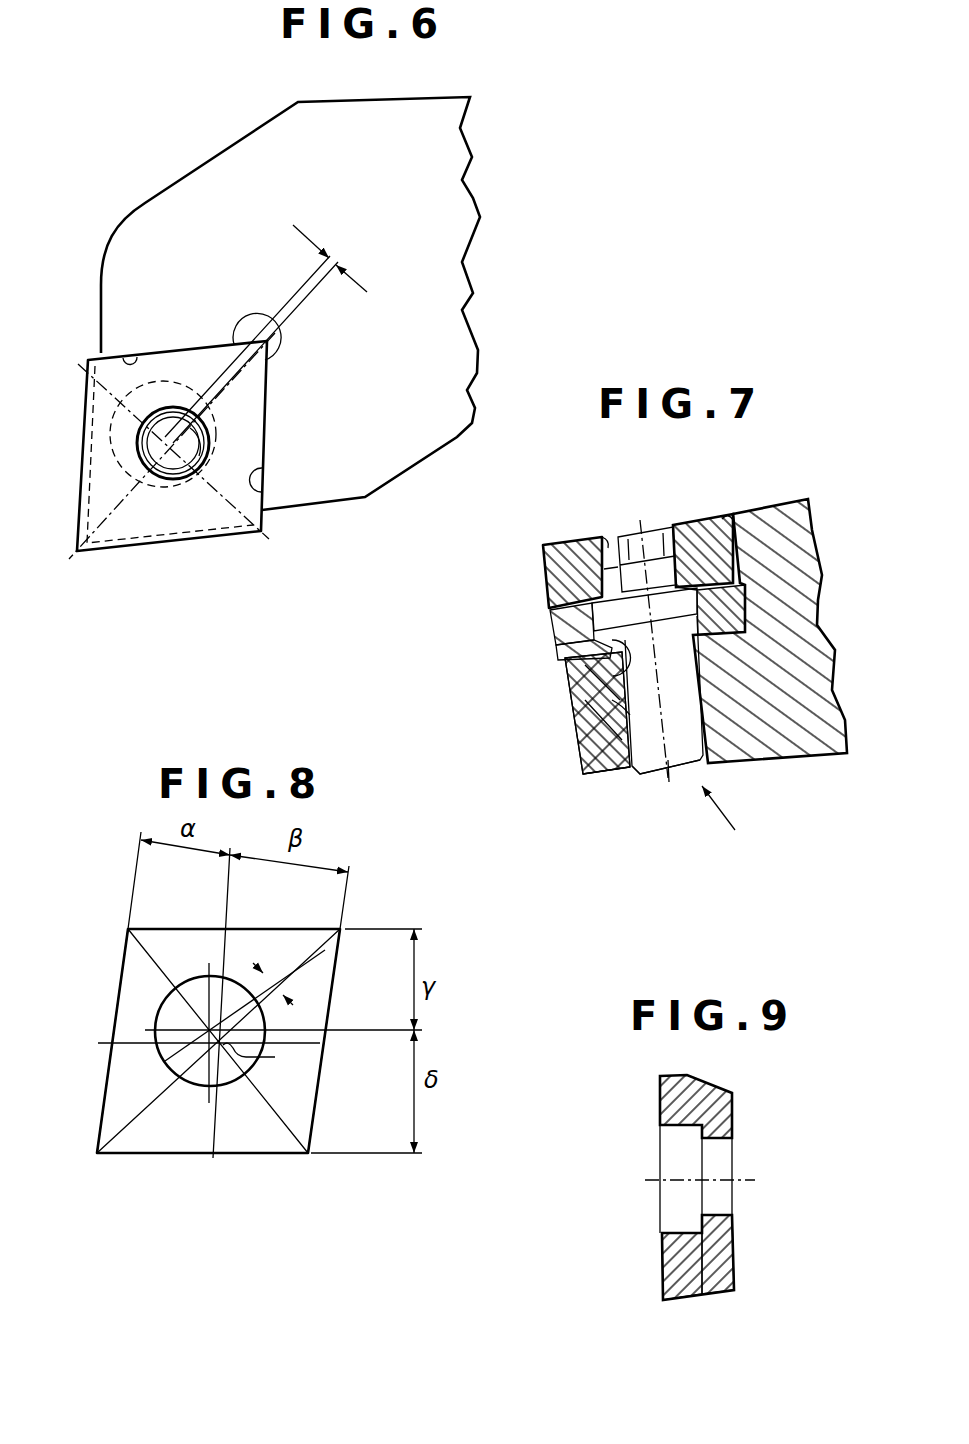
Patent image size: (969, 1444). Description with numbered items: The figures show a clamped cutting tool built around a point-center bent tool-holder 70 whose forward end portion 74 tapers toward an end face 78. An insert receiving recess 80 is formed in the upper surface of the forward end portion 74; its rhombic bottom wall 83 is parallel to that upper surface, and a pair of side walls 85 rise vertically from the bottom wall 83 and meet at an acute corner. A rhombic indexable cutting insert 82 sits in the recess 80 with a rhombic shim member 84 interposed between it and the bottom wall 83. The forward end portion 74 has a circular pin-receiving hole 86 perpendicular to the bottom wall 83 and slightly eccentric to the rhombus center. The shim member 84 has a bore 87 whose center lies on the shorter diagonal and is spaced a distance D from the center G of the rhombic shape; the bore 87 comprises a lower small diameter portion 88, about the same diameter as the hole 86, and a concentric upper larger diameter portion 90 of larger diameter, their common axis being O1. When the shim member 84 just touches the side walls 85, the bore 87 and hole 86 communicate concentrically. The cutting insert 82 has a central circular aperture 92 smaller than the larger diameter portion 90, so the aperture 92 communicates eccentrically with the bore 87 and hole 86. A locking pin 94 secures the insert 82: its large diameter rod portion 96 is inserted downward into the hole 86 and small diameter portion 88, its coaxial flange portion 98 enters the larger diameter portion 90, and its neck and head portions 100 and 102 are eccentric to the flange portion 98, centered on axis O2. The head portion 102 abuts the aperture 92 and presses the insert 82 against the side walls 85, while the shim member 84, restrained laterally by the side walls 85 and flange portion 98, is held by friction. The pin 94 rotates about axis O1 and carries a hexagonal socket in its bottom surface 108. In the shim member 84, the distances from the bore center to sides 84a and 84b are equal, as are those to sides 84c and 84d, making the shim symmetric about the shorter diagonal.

In FIG. 6, the tool-holder 70 is at (301, 272).
In FIG. 6, the forward end portion 74 is at (215, 180).
In FIG. 7, the forward end portion 74 is at (800, 511).
In FIG. 7, the end face 78 is at (570, 735).
In FIG. 6, the insert receiving recess 80 is at (278, 352).
In FIG. 7, the insert receiving recess 80 is at (560, 652).
In FIG. 6, the indexable cutting insert 82 is at (153, 537).
In FIG. 7, the indexable cutting insert 82 is at (550, 545).
In FIG. 7, the bottom wall 83 is at (560, 628).
In FIG. 6, the shim member 84 is at (118, 547).
In FIG. 7, the shim member 84 is at (548, 612).
In FIG. 8, the shim member 84 is at (128, 960).
In FIG. 9, the shim member 84 is at (668, 1110).
In FIG. 8, the side of the shim member 84a is at (100, 1063).
In FIG. 8, the side of the shim member 84b is at (172, 929).
In FIG. 8, the side of the shim member 84c is at (332, 985).
In FIG. 8, the side of the shim member 84d is at (262, 1153).
In FIG. 6, the side walls 85 is at (128, 358).
In FIG. 7, the side walls 85 is at (735, 513).
In FIG. 7, the pin-receiving hole 86 is at (584, 773).
In FIG. 7, the bore 87 is at (470, 692).
In FIG. 9, the bore 87 is at (747, 1365).
In FIG. 7, the lower small diameter portion 88 is at (575, 682).
In FIG. 9, the lower small diameter portion 88 is at (728, 1218).
In FIG. 6, the upper larger diameter portion 90 is at (112, 457).
In FIG. 7, the upper larger diameter portion 90 is at (575, 708).
In FIG. 8, the upper larger diameter portion 90 is at (155, 1012).
In FIG. 9, the upper larger diameter portion 90 is at (670, 1232).
In FIG. 6, the aperture 92 is at (180, 482).
In FIG. 7, the aperture 92 is at (600, 542).
In FIG. 7, the locking pin 94 is at (723, 816).
In FIG. 7, the large diameter rod portion 96 is at (657, 735).
In FIG. 6, the flange portion 98 is at (112, 490).
In FIG. 7, the flange portion 98 is at (675, 612).
In FIG. 7, the neck portion 100 is at (660, 542).
In FIG. 6, the head portion 102 is at (205, 449).
In FIG. 7, the head portion 102 is at (625, 540).
In FIG. 7, the bottom surface 108 is at (690, 770).
In FIG. 6, the axis O1 is at (170, 410).
In FIG. 7, the axis O1 is at (671, 784).
In FIG. 8, the axis O1 is at (215, 1045).
In FIG. 9, the axis O1 is at (745, 1175).
In FIG. 7, the center axis O2 is at (648, 535).
In FIG. 6, the distance D is at (332, 258).
In FIG. 8, the distance D is at (245, 996).
In FIG. 6, the center G is at (207, 438).
In FIG. 8, the center G is at (260, 1062).